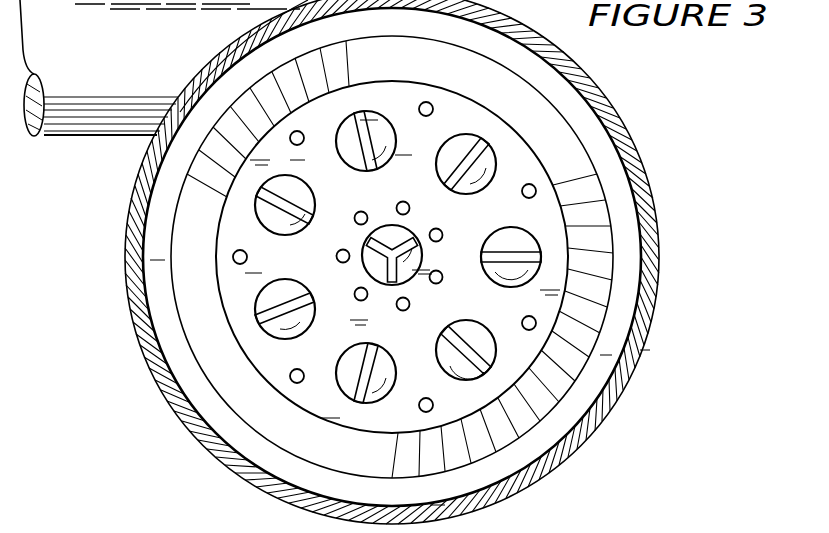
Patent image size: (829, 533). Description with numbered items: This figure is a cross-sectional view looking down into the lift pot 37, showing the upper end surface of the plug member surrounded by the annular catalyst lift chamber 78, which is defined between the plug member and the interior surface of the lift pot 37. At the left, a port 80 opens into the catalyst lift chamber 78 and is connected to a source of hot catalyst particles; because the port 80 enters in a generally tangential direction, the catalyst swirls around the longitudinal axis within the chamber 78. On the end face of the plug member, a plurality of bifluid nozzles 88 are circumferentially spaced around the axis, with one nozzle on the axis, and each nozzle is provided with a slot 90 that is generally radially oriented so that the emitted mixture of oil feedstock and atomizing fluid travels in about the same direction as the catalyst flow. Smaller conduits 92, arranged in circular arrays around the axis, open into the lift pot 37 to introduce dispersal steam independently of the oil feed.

The lift pot 37 is at (648, 177).
The catalyst lift chamber 78 is at (642, 284).
The port 80 is at (80, 137).
The bifluid nozzles 88 is at (345, 396).
The slots 90 is at (258, 322).
The conduits 92 is at (433, 103).